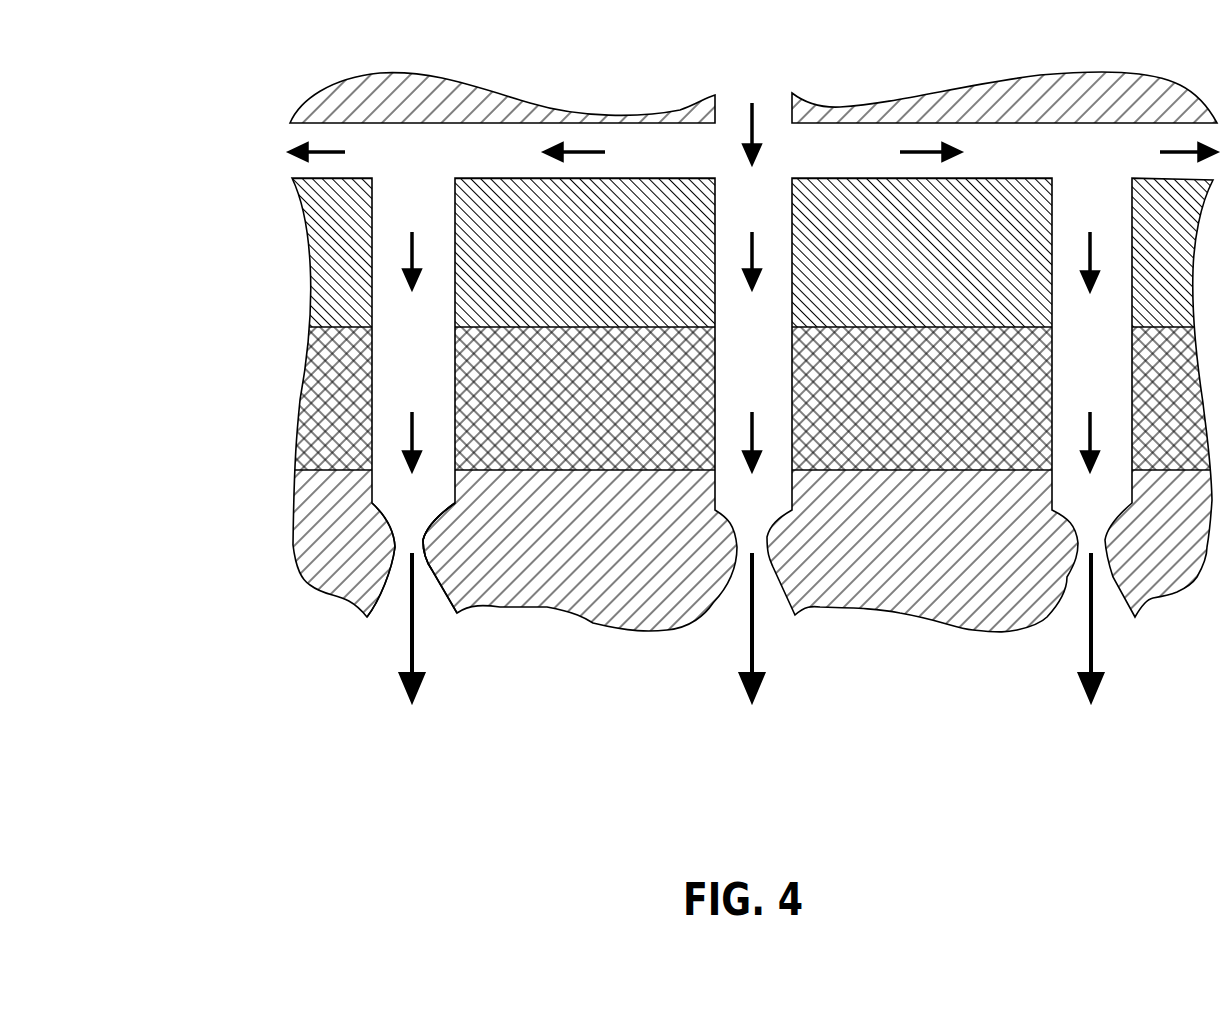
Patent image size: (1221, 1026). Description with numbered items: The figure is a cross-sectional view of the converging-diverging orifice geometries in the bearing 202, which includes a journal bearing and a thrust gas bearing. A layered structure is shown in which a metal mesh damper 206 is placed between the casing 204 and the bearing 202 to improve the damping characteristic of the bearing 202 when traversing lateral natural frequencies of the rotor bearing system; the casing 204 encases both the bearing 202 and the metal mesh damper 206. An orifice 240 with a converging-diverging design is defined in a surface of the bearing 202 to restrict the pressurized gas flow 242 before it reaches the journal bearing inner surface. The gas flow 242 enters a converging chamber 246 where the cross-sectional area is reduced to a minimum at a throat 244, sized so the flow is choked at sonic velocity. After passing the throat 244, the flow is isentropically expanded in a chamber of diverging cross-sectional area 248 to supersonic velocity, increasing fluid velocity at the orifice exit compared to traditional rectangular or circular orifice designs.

The bearing 202 is at (322, 533).
The casing 204 is at (333, 250).
The metal mesh damper 206 is at (327, 412).
The orifice 240 is at (394, 547).
The pressurized gas flow 242 is at (748, 115).
The throat 244 is at (423, 547).
The converging chamber 246 is at (422, 515).
The chamber of diverging cross-sectional area 248 is at (427, 588).